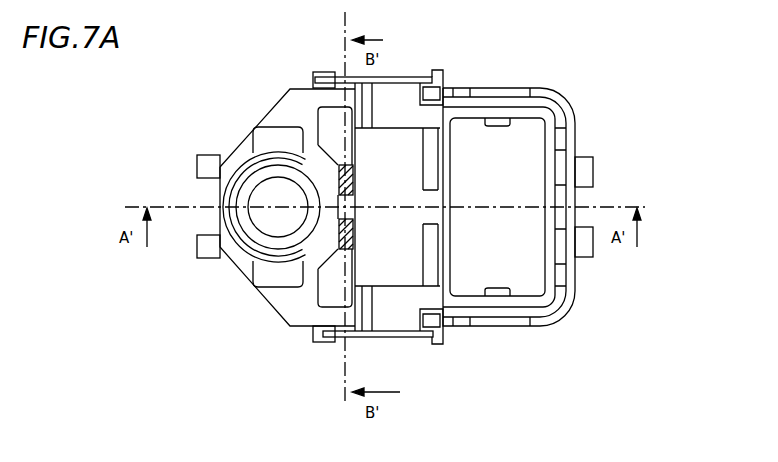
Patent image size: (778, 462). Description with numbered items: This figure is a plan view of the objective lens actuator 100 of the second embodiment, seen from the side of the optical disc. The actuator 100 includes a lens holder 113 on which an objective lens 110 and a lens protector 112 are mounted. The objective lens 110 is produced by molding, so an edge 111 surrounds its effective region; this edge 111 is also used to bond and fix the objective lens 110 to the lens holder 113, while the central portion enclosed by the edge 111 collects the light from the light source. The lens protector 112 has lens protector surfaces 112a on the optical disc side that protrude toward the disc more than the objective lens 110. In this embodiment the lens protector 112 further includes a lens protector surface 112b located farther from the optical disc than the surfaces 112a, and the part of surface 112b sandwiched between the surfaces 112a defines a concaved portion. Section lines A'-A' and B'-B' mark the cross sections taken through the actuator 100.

The objective lens actuator 100 is at (462, 59).
The objective lens 110 is at (266, 221).
The edge 111 is at (278, 255).
The lens protector 112 is at (333, 290).
The lens protector surface 112a is at (350, 190).
The lens protector surface 112b is at (328, 130).
The lens holder 113 is at (293, 315).